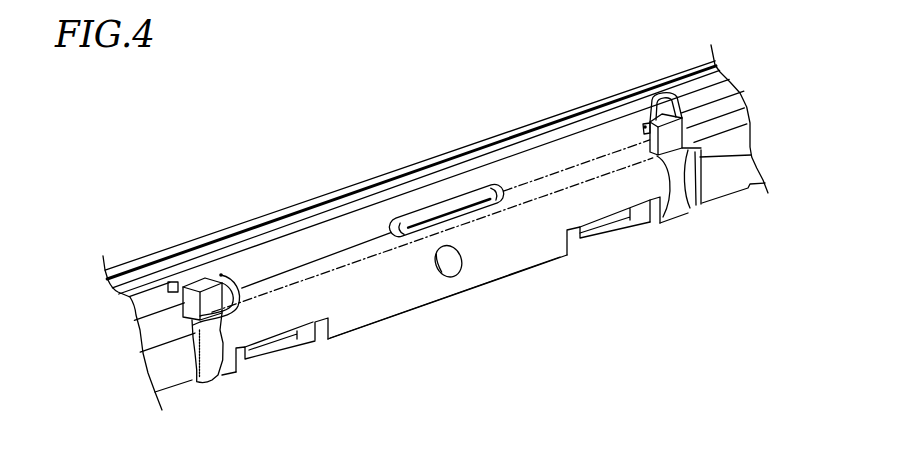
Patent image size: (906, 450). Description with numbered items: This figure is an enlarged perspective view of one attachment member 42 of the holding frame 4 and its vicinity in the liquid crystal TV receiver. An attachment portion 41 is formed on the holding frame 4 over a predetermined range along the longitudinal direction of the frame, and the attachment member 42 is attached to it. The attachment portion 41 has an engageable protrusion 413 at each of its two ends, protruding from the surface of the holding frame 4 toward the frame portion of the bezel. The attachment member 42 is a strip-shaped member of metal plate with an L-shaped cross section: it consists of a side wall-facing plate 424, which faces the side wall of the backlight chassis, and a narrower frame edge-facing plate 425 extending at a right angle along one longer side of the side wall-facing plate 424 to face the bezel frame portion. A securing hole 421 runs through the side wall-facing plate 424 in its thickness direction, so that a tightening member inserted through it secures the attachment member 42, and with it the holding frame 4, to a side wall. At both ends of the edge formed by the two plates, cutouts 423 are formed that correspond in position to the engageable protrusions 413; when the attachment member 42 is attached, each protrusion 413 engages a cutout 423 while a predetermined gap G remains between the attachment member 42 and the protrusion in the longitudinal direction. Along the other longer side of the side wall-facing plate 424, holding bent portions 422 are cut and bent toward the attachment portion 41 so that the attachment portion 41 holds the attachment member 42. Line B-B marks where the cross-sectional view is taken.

The holding frame 4 is at (688, 61).
The attachment portion 41 is at (418, 157).
The attachment member 42 is at (519, 282).
The engageable protrusion 413 is at (203, 284).
The securing hole 421 is at (451, 266).
The holding bent portion 422 is at (273, 343).
The cutout 423 is at (213, 384).
The side wall-facing plate 424 is at (377, 318).
The frame edge-facing plate 425 is at (327, 233).
The gap G is at (220, 273).
The line B- B is at (607, 90).